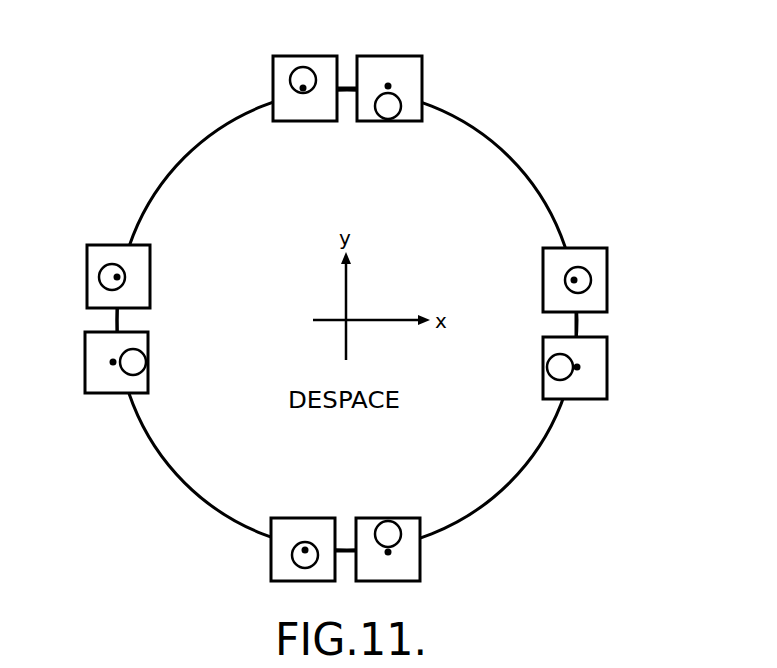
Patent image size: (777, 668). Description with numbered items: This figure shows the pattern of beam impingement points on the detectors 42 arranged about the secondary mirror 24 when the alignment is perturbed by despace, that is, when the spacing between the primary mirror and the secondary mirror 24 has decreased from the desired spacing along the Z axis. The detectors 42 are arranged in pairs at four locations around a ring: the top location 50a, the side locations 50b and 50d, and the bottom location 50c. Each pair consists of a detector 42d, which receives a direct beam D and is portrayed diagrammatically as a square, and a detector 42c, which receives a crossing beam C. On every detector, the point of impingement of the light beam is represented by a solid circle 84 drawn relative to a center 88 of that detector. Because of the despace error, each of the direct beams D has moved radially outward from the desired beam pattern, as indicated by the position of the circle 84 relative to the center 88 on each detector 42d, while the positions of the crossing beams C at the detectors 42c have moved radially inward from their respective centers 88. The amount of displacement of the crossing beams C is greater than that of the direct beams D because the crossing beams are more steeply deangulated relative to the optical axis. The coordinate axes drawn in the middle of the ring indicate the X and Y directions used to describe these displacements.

The secondary mirror 24 is at (523, 468).
The detectors 42 is at (422, 547).
The detectors receiving crossing beams 42c is at (410, 56).
The detectors receiving direct beams 42d is at (300, 56).
The top location of the detector array 50a is at (348, 120).
The side location of the detector array 50b is at (156, 321).
The bottom location of the detector array 50c is at (348, 528).
The side location of the detector array 50d is at (556, 324).
The solid circle 84 is at (100, 278).
The center 88 is at (390, 86).